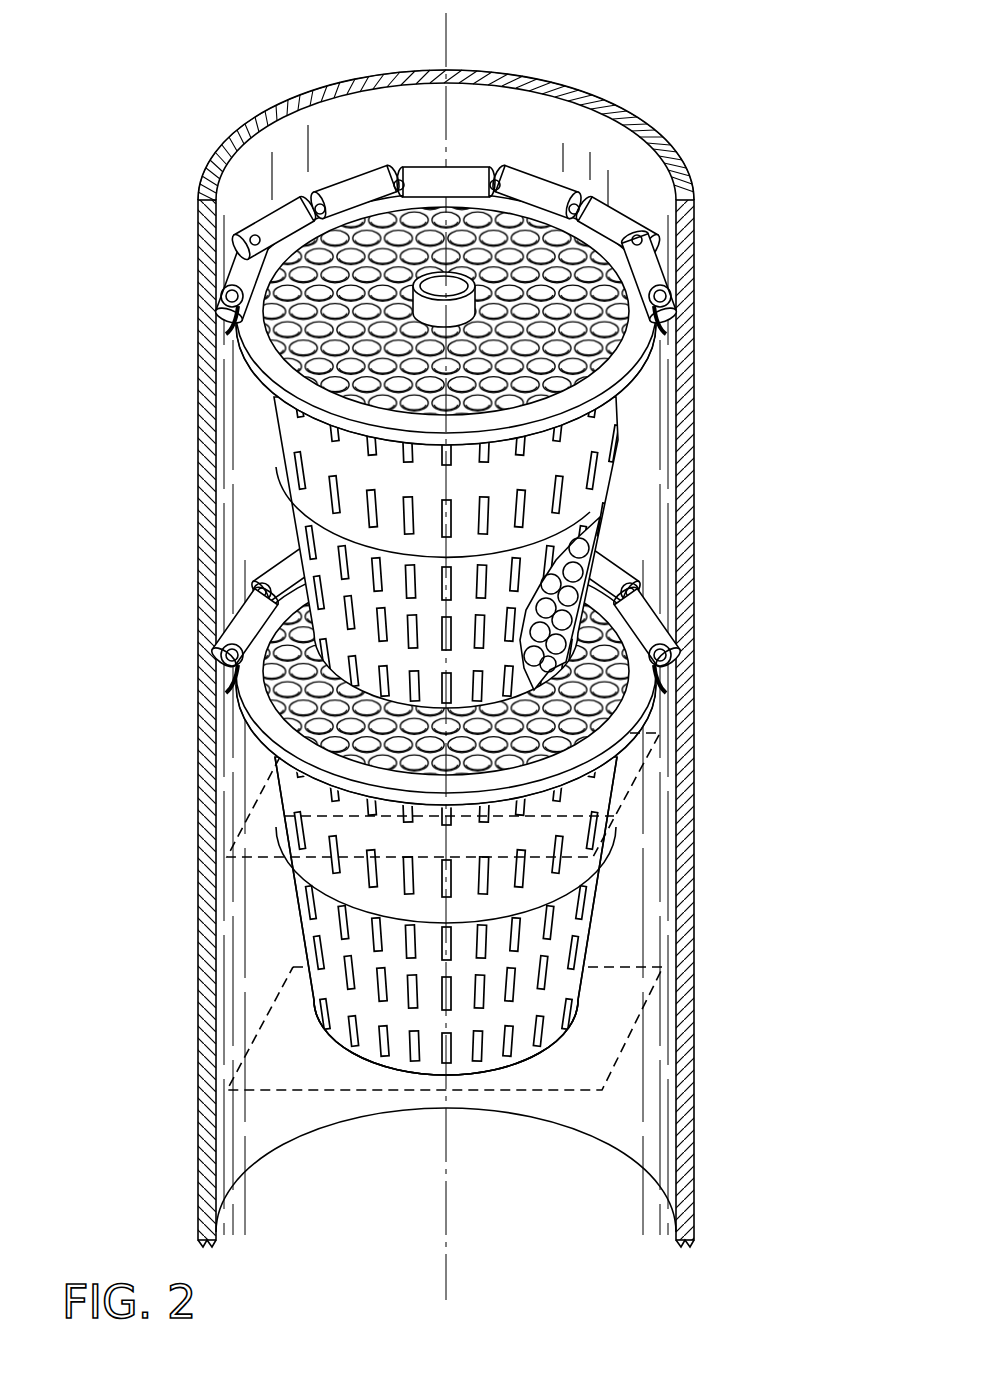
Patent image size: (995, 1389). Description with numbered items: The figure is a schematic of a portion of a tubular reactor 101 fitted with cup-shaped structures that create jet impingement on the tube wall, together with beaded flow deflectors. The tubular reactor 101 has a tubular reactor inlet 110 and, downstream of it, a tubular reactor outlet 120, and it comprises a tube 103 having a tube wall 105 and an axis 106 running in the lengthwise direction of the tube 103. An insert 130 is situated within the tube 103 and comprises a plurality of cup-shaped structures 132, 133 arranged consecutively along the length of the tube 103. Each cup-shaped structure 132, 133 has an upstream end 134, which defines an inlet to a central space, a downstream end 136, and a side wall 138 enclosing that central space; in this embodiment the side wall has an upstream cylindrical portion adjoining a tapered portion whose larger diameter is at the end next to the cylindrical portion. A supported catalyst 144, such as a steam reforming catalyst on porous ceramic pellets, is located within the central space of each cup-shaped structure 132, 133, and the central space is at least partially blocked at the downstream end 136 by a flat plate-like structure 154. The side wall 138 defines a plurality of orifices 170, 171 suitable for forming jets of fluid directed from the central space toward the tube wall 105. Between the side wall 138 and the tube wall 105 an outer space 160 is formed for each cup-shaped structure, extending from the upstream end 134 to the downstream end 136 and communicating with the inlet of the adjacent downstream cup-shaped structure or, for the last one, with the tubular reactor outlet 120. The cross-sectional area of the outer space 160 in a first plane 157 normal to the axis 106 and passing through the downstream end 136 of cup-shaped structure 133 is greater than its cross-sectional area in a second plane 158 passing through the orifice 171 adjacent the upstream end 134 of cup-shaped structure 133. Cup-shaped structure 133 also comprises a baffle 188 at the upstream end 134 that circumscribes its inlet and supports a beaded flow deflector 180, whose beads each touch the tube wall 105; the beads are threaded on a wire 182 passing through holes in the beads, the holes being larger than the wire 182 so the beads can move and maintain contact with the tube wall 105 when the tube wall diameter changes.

The tubular reactor 101 is at (741, 160).
The tube 103 is at (145, 562).
The tube wall 105 is at (680, 496).
The axis 106 is at (448, 38).
The tubular reactor inlet 110 is at (346, 137).
The tubular reactor outlet 120 is at (560, 1183).
The insert 130 is at (518, 192).
The cup-shaped structure 132 is at (620, 548).
The cup-shaped structure 133 is at (620, 943).
The upstream end 134 is at (230, 377).
The downstream end 136 is at (328, 688).
The side wall 138 is at (288, 484).
The supported catalyst 144 is at (545, 603).
The flat plate-like structure 154 is at (560, 738).
The first plane 157 is at (637, 1020).
The second plane 158 is at (628, 800).
The outer space 160 is at (270, 567).
The orifices 170 is at (300, 468).
The orifice 171 is at (367, 814).
The beaded flow deflector 180 is at (214, 607).
The wire 182 is at (496, 180).
The baffle 188 is at (660, 388).